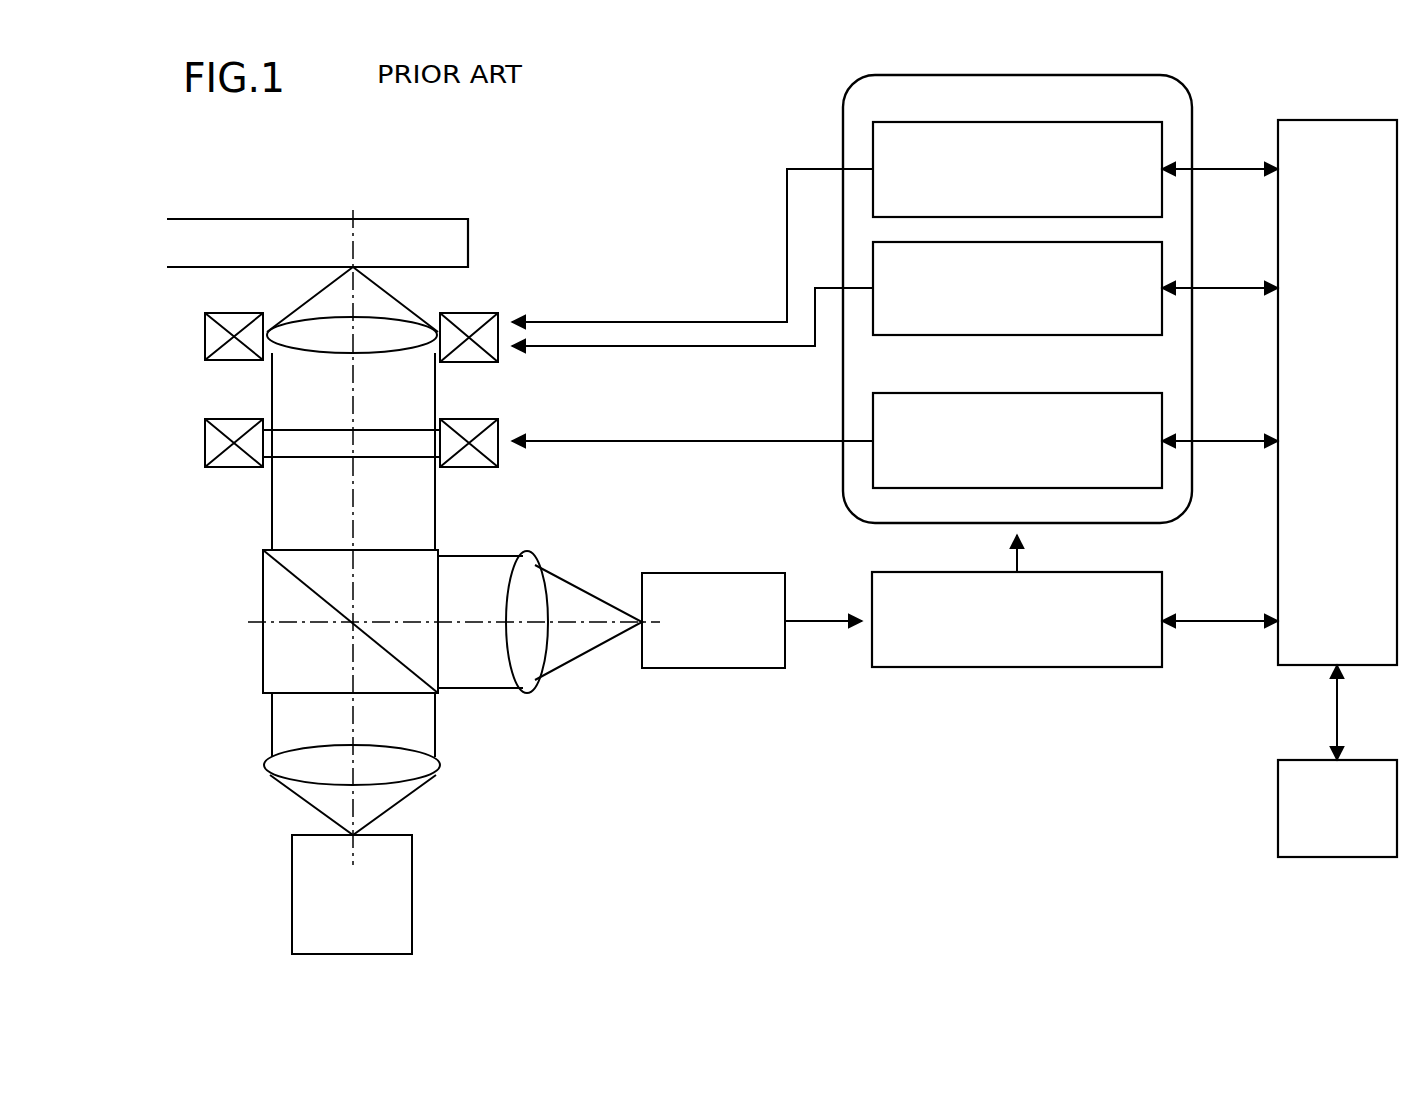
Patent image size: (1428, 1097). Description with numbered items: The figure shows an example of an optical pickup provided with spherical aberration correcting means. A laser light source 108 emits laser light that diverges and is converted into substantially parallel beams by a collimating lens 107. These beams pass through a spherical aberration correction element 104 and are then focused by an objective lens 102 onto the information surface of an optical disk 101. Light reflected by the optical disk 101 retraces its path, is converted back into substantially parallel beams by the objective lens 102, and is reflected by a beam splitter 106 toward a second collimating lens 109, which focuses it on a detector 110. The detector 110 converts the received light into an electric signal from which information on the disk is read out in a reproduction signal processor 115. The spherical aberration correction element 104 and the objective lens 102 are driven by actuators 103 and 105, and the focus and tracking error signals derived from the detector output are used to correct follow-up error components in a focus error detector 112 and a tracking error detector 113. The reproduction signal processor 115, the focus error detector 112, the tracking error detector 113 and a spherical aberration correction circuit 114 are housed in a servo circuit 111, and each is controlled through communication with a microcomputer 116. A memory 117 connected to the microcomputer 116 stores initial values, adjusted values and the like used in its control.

The optical disk 101 is at (458, 218).
The objective lens 102 is at (405, 322).
The actuator 103 is at (497, 320).
The spherical aberration correction element 104 is at (370, 436).
The actuator 105 is at (499, 436).
The beam splitter 106 is at (372, 556).
The collimating lens 107 is at (366, 748).
The laser light source 108 is at (406, 847).
The second collimating lens 109 is at (530, 560).
The detector 110 is at (683, 578).
The servo circuit 111 is at (1188, 100).
The focus error detector 112 is at (1090, 128).
The tracking error detector 113 is at (928, 338).
The spherical aberration correction circuit 114 is at (1090, 395).
The reproduction signal processor 115 is at (1098, 573).
The microcomputer 116 is at (1345, 124).
The memory 117 is at (1362, 764).